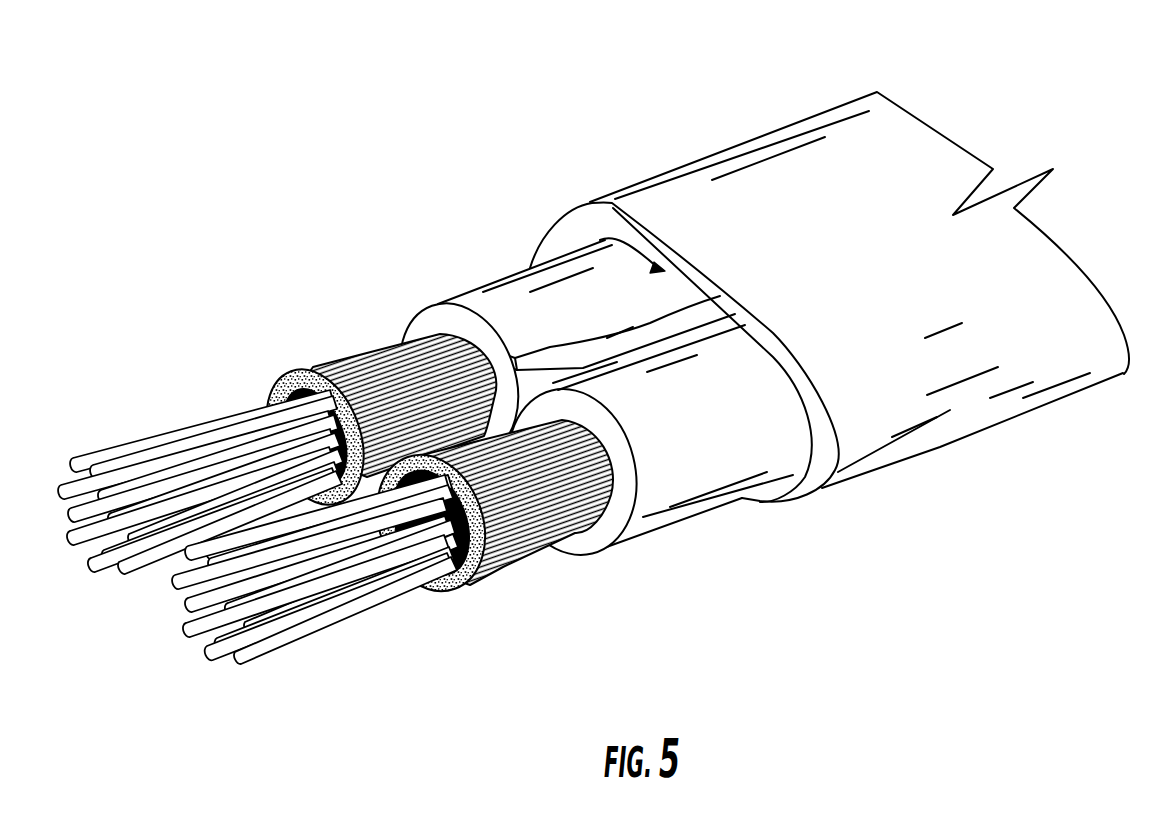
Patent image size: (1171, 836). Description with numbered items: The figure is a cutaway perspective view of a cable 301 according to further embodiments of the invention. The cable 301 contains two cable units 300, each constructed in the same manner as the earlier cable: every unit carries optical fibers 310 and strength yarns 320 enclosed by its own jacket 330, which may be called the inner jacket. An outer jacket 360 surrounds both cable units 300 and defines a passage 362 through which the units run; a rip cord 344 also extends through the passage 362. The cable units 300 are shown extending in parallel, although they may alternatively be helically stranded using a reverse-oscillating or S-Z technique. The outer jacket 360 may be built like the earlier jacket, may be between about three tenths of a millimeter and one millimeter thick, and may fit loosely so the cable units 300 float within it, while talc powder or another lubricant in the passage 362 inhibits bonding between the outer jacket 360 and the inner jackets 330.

The cable unit 300 is at (80, 447).
The cable 301 is at (440, 147).
The conductor strands 310 is at (190, 473).
The conductive layer 320 is at (322, 373).
The jacket 330 is at (487, 280).
The rip cord 344 is at (542, 357).
The outer jacket 360 is at (752, 187).
The passage 362 is at (601, 240).